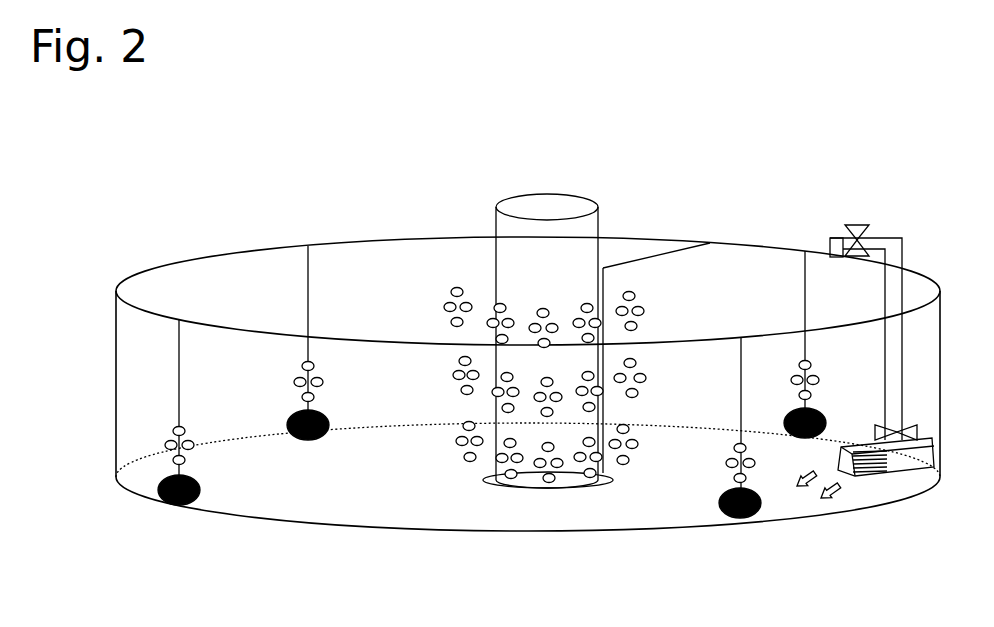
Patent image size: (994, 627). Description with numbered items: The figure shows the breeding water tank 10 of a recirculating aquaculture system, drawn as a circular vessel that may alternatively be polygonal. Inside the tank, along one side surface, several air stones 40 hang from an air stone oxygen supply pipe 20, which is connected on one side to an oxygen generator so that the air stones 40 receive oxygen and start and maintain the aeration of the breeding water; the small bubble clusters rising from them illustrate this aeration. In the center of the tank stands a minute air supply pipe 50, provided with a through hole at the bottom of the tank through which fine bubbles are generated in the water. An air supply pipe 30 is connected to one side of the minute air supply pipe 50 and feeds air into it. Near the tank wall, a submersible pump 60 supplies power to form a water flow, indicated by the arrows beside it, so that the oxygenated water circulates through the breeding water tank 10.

The breeding water tank 10 is at (116, 364).
The air stone oxygen supply pipe 20 is at (307, 270).
The air supply pipe 30 is at (660, 255).
The air stone 40 is at (311, 440).
The minute air supply pipe 50 is at (602, 488).
The submersible pump 60 is at (905, 463).